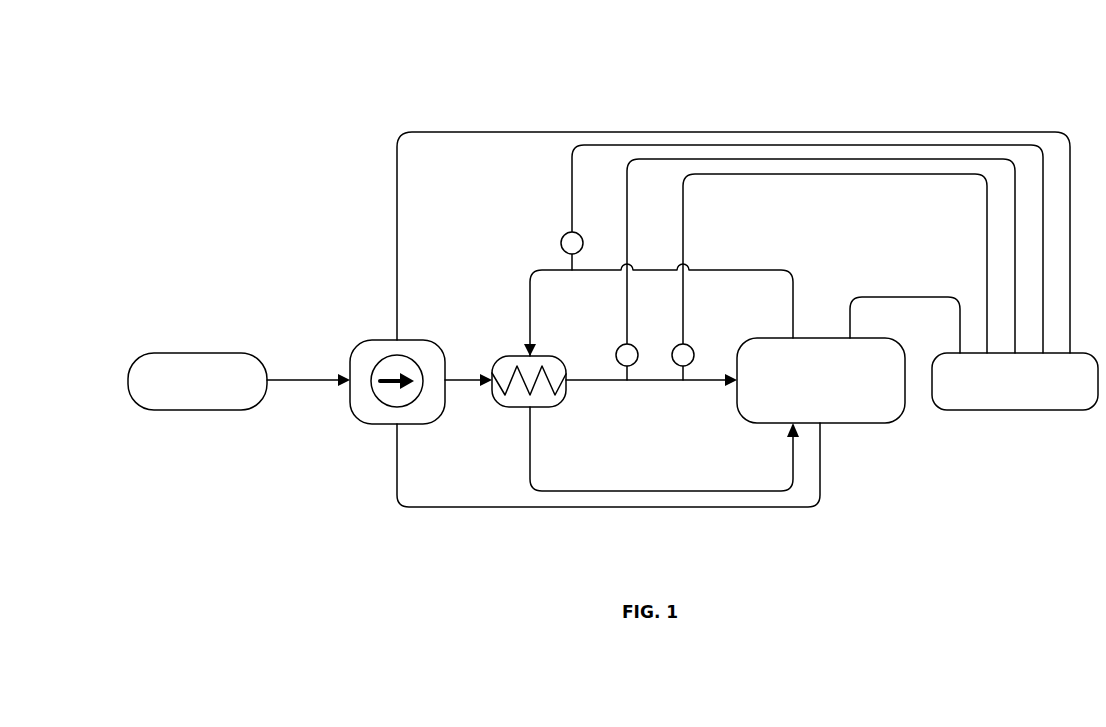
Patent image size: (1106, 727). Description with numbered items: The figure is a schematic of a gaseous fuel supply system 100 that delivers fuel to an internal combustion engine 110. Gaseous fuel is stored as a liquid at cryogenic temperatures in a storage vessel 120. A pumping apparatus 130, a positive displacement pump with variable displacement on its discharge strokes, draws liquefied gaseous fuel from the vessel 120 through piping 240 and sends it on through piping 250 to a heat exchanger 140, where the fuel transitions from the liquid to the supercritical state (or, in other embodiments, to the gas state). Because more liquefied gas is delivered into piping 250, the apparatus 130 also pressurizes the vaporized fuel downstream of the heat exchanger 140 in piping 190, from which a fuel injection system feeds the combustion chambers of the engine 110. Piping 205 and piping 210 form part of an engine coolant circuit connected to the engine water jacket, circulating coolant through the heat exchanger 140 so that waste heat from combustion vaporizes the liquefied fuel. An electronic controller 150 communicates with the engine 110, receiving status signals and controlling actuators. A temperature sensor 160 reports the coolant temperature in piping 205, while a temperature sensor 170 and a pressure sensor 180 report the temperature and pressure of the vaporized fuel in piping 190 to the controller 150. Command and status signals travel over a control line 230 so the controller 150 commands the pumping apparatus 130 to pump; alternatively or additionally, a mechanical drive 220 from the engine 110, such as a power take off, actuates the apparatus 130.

The gaseous fuel supply system 100 is at (646, 100).
The internal combustion engine 110 is at (848, 424).
The storage vessel 120 is at (213, 354).
The pumping apparatus 130 is at (390, 340).
The heat exchanger 140 is at (512, 356).
The electronic controller 150 is at (1018, 411).
The temperature sensor 160 is at (562, 244).
The temperature sensor 170 is at (617, 355).
The pressure sensor 180 is at (694, 355).
The piping 190 is at (646, 382).
The piping 205 is at (750, 270).
The piping 210 is at (644, 491).
The mechanical drive 220 is at (733, 509).
The control line 230 is at (480, 132).
The piping 240 is at (287, 382).
The piping 250 is at (452, 382).